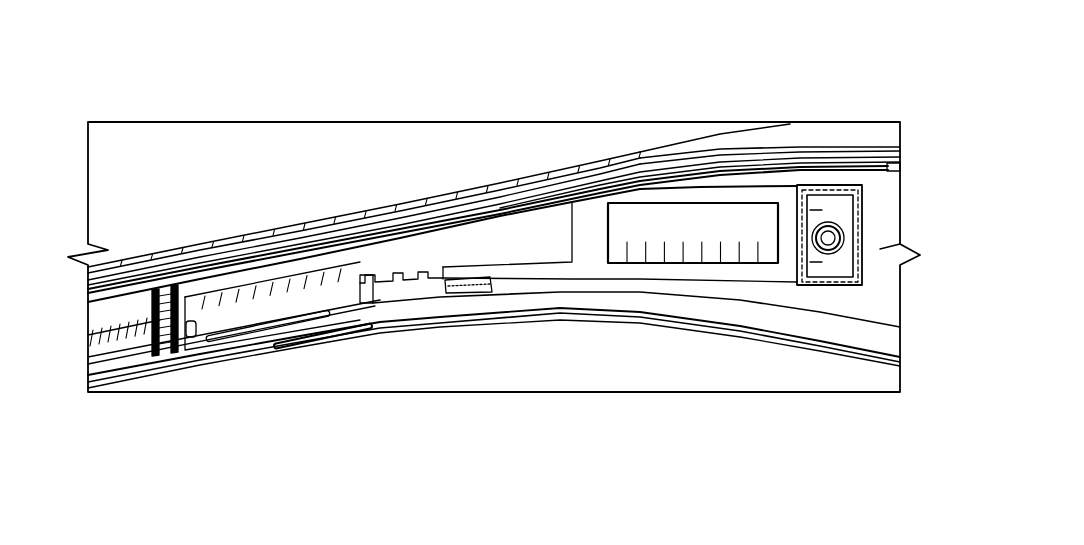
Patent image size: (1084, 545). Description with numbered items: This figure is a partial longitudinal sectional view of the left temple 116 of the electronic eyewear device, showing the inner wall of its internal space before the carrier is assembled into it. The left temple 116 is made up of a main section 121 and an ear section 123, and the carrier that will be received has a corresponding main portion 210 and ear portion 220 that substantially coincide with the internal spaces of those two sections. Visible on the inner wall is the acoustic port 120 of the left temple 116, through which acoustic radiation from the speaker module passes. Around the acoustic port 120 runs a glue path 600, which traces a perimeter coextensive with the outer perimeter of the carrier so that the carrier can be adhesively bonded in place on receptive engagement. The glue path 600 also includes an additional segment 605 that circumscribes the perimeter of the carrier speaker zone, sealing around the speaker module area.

The left temple 116 is at (600, 78).
The acoustic port 120 is at (281, 324).
The main section 121 is at (790, 123).
The ear section 123 is at (368, 216).
The main portion 210 is at (676, 136).
The ear portion 220 is at (252, 236).
The glue path 600 is at (634, 278).
The additional segment 605 is at (592, 206).